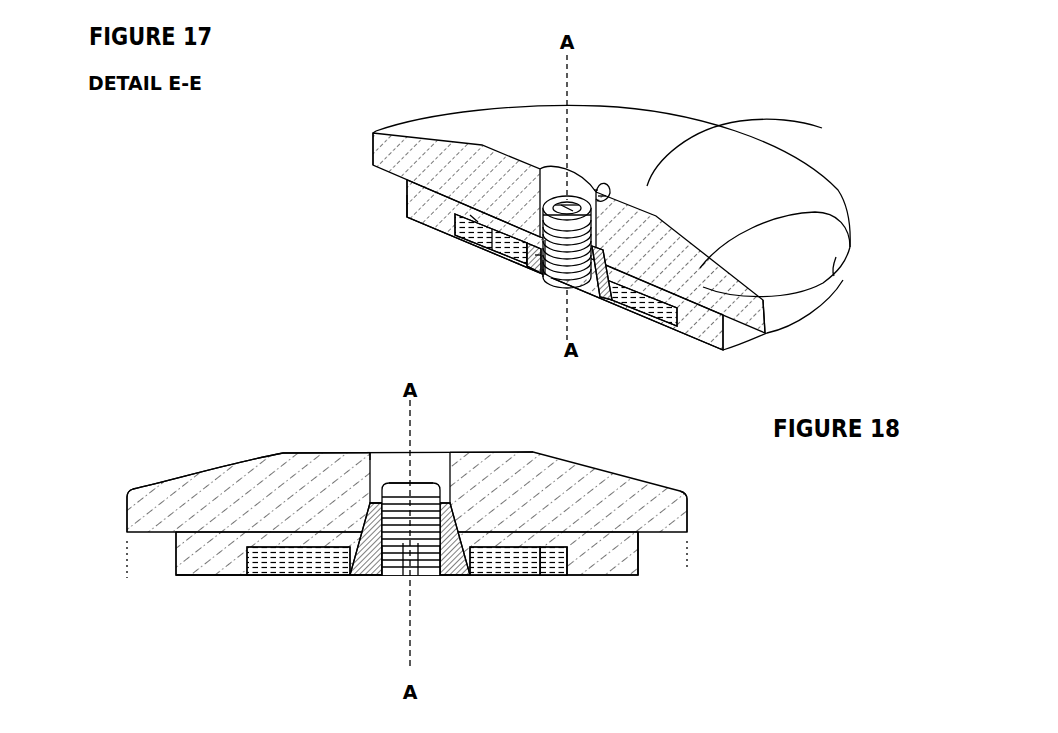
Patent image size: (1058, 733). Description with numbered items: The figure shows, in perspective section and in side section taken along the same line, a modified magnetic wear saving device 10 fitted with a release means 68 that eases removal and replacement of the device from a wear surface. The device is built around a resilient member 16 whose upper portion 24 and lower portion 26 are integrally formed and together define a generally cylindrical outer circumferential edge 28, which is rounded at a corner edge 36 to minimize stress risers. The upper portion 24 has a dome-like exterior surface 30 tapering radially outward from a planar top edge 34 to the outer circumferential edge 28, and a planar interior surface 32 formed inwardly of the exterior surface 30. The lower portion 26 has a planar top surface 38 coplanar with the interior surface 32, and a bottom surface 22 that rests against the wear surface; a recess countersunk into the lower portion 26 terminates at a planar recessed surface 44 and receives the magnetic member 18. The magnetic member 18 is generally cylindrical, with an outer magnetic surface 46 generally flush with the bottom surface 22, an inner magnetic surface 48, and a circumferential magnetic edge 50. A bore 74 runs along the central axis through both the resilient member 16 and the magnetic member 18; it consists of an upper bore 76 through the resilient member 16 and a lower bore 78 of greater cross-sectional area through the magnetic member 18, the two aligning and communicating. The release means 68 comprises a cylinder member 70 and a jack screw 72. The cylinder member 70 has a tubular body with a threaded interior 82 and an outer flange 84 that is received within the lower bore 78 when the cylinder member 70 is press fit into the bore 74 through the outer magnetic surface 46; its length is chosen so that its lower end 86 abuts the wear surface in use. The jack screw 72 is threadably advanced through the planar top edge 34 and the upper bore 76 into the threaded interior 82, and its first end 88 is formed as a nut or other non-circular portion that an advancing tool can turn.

In FIG. 17, the magnetic wear saving device 10 is at (752, 96).
In FIG. 18, the magnetic wear saving device 10 is at (213, 384).
In FIG. 17, the resilient member 16 is at (436, 122).
In FIG. 18, the resilient member 16 is at (604, 468).
In FIG. 17, the magnetic member 18 is at (632, 314).
In FIG. 18, the magnetic member 18 is at (279, 580).
In FIG. 17, the bottom surface 22 is at (430, 226).
In FIG. 18, the bottom surface 22 is at (208, 560).
In FIG. 17, the upper portion 24 is at (752, 320).
In FIG. 18, the upper portion 24 is at (657, 537).
In FIG. 17, the lower portion 26 is at (411, 210).
In FIG. 18, the lower portion 26 is at (233, 580).
In FIG. 17, the outer circumferential edge 28 is at (370, 147).
In FIG. 18, the outer circumferential edge 28 is at (690, 508).
In FIG. 17, the exterior surface 30 is at (788, 193).
In FIG. 18, the exterior surface 30 is at (180, 477).
In FIG. 17, the interior surface 32 is at (833, 212).
In FIG. 18, the interior surface 32 is at (226, 470).
In FIG. 17, the planar top edge 34 is at (822, 128).
In FIG. 18, the planar top edge 34 is at (326, 540).
In FIG. 17, the corner edge 36 is at (374, 133).
In FIG. 18, the corner edge 36 is at (130, 497).
In FIG. 17, the top surface 38 is at (714, 322).
In FIG. 18, the top surface 38 is at (153, 541).
In FIG. 17, the recessed surface 44 is at (478, 200).
In FIG. 18, the recessed surface 44 is at (507, 546).
In FIG. 18, the outer magnetic surface 46 is at (492, 578).
In FIG. 18, the inner magnetic surface 48 is at (280, 545).
In FIG. 17, the circumferential magnetic edge 50 is at (460, 237).
In FIG. 17, the release means 68 is at (578, 284).
In FIG. 18, the release means 68 is at (380, 494).
In FIG. 17, the cylinder member 70 is at (647, 187).
In FIG. 18, the cylinder member 70 is at (374, 492).
In FIG. 17, the jack screw 72 is at (550, 292).
In FIG. 18, the jack screw 72 is at (400, 578).
In FIG. 17, the bore 74 is at (594, 180).
In FIG. 18, the bore 74 is at (393, 446).
In FIG. 17, the upper bore 76 is at (553, 198).
In FIG. 18, the upper bore 76 is at (414, 578).
In FIG. 17, the lower bore 78 is at (531, 257).
In FIG. 18, the lower bore 78 is at (366, 579).
In FIG. 17, the threaded interior 82 is at (543, 200).
In FIG. 18, the threaded interior 82 is at (445, 492).
In FIG. 17, the outer flange 84 is at (540, 277).
In FIG. 18, the outer flange 84 is at (474, 578).
In FIG. 18, the lower end 86 is at (421, 578).
In FIG. 17, the first end 88 is at (567, 200).
In FIG. 18, the first end 88 is at (415, 480).